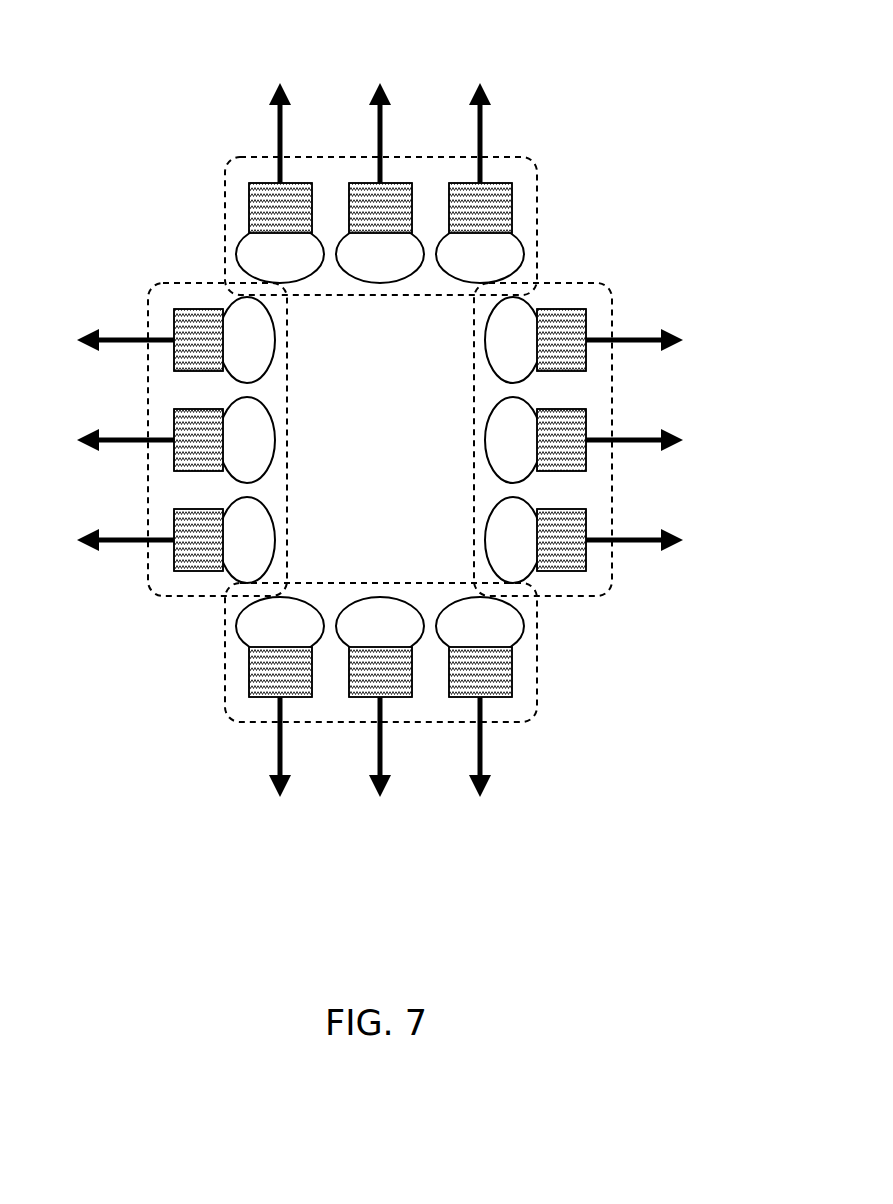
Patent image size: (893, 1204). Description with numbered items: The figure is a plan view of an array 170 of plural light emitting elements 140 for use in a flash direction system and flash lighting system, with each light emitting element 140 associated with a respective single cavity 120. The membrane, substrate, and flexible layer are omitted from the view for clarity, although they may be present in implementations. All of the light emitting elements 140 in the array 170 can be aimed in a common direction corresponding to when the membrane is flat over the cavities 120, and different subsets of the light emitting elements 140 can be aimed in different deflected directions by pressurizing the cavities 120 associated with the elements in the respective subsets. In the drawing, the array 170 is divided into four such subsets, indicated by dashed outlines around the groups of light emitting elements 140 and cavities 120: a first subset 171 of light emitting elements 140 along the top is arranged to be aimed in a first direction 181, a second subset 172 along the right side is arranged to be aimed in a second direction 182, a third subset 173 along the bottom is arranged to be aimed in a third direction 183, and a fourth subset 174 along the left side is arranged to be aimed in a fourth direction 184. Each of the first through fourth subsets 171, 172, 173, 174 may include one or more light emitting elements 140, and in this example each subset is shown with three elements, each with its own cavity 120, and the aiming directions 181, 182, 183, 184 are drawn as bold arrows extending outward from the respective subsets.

The array 170 is at (150, 82).
The first subset 171 is at (533, 170).
The second subset 172 is at (607, 292).
The third subset 173 is at (225, 710).
The fourth subset 174 is at (150, 587).
The cavity 120 is at (262, 265).
The light emitting element 140 is at (262, 219).
The first direction 181 is at (380, 121).
The second direction 182 is at (656, 440).
The third direction 183 is at (380, 759).
The fourth direction 184 is at (105, 440).